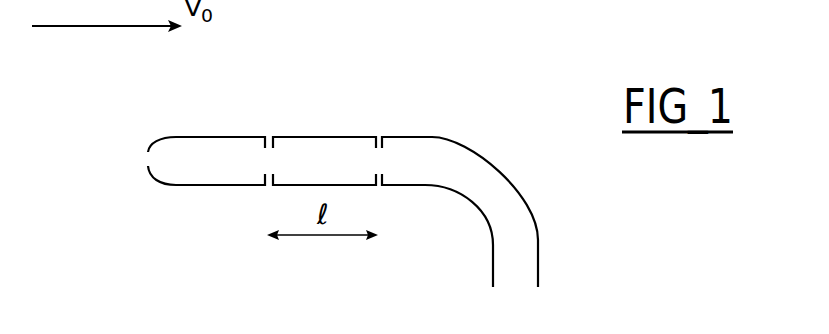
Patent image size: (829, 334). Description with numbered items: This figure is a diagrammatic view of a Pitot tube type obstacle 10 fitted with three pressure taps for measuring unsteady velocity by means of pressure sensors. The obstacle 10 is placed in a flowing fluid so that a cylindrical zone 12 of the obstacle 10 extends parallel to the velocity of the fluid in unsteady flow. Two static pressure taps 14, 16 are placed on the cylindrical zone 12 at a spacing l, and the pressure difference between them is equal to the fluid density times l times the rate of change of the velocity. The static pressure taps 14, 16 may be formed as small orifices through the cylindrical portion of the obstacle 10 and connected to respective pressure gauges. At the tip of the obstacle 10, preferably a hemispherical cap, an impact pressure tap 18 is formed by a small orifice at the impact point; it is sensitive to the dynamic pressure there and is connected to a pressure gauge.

The obstacle 10 is at (429, 127).
The cylindrical zone 12 is at (226, 136).
The static pressure tap 14 is at (289, 147).
The static pressure tap 16 is at (368, 158).
The impact pressure tap 18 is at (146, 159).